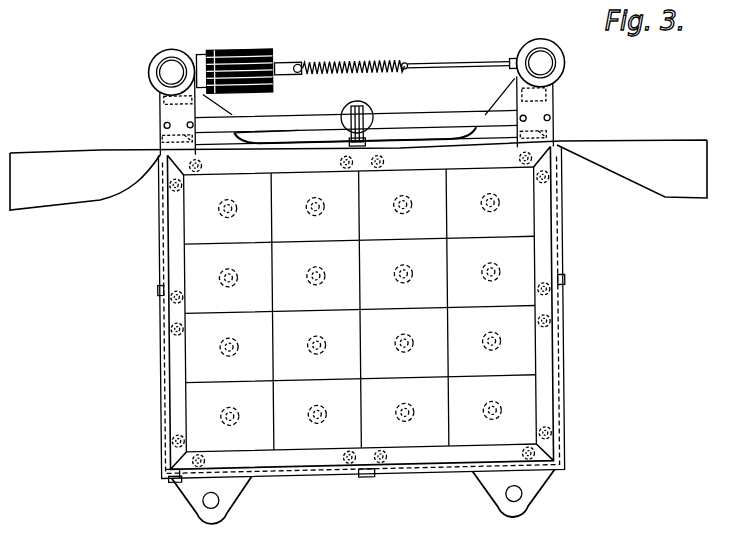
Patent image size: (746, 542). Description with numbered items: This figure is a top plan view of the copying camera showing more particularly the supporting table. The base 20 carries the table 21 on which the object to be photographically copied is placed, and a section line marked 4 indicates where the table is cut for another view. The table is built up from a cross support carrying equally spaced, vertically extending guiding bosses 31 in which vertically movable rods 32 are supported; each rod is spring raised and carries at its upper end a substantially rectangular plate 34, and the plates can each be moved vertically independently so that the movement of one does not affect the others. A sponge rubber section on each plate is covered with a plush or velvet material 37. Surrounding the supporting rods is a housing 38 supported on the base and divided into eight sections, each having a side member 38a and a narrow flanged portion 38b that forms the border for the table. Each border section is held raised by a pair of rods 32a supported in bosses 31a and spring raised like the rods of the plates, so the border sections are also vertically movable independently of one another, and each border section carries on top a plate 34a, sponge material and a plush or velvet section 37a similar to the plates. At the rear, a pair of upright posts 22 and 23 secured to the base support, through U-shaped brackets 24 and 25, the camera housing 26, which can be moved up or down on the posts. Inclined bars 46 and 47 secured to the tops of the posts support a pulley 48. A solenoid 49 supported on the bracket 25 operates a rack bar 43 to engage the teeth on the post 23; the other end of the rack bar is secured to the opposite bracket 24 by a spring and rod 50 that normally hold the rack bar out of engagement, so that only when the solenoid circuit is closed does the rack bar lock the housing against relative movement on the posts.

The section line 4- 4 is at (307, 298).
The base 20 is at (566, 484).
The table 21 is at (546, 344).
The upright post 22 is at (549, 63).
The upright post 23 is at (163, 73).
The bracket 24 is at (537, 44).
The bracket 25 is at (153, 58).
The camera housing 26 is at (79, 147).
The guiding boss 31 is at (308, 346).
The boss 31a is at (161, 470).
The vertically movable rod 32 is at (311, 340).
The rod 32a is at (182, 480).
The rectangular plate 34 is at (535, 398).
The plate 34a is at (177, 406).
The plush or velvet material 37 is at (323, 351).
The plush or velvet section 37a is at (180, 420).
The housing 38 is at (569, 286).
The side member 38a is at (562, 266).
The narrow flanged portion 38b is at (558, 240).
The rack bar 43 is at (199, 58).
The inclined bar 46 is at (433, 116).
The inclined bar 47 is at (287, 118).
The pulley 48 is at (360, 104).
The solenoid 49 is at (246, 48).
The spring and rod 50 is at (407, 58).